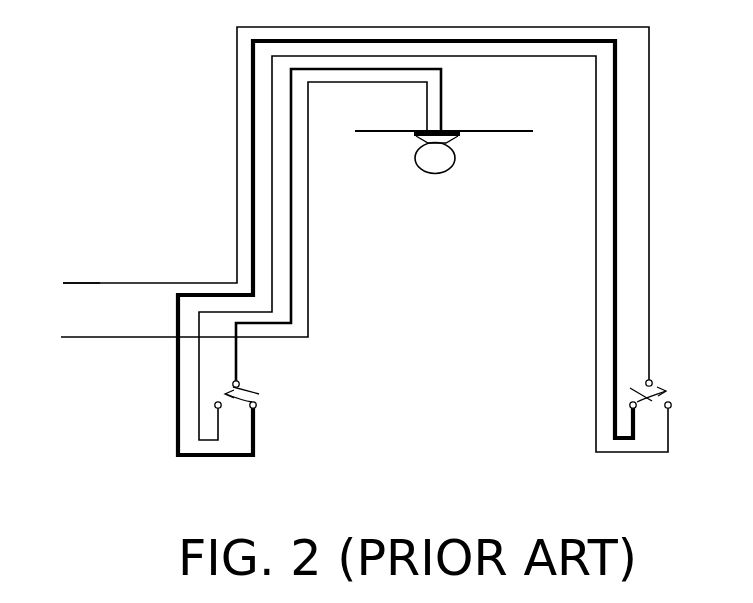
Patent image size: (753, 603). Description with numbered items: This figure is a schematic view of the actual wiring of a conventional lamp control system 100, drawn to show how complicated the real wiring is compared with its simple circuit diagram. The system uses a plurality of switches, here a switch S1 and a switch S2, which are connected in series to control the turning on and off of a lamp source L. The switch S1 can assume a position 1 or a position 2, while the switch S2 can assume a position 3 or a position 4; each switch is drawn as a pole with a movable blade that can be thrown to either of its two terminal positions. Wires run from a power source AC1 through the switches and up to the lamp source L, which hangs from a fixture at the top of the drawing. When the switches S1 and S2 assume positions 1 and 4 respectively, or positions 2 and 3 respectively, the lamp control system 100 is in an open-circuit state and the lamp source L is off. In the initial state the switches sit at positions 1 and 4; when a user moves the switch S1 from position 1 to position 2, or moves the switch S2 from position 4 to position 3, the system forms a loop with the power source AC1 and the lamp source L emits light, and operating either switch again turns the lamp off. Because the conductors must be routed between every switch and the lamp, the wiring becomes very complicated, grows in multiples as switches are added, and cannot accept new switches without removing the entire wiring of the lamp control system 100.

The lamp control system 100 is at (401, 342).
The power source AC1 is at (230, 209).
The lamp source L is at (444, 178).
The switch S1 is at (256, 379).
The switch S2 is at (667, 383).
The position 1 is at (263, 405).
The position 2 is at (211, 406).
The position 3 is at (681, 415).
The position 4 is at (628, 386).